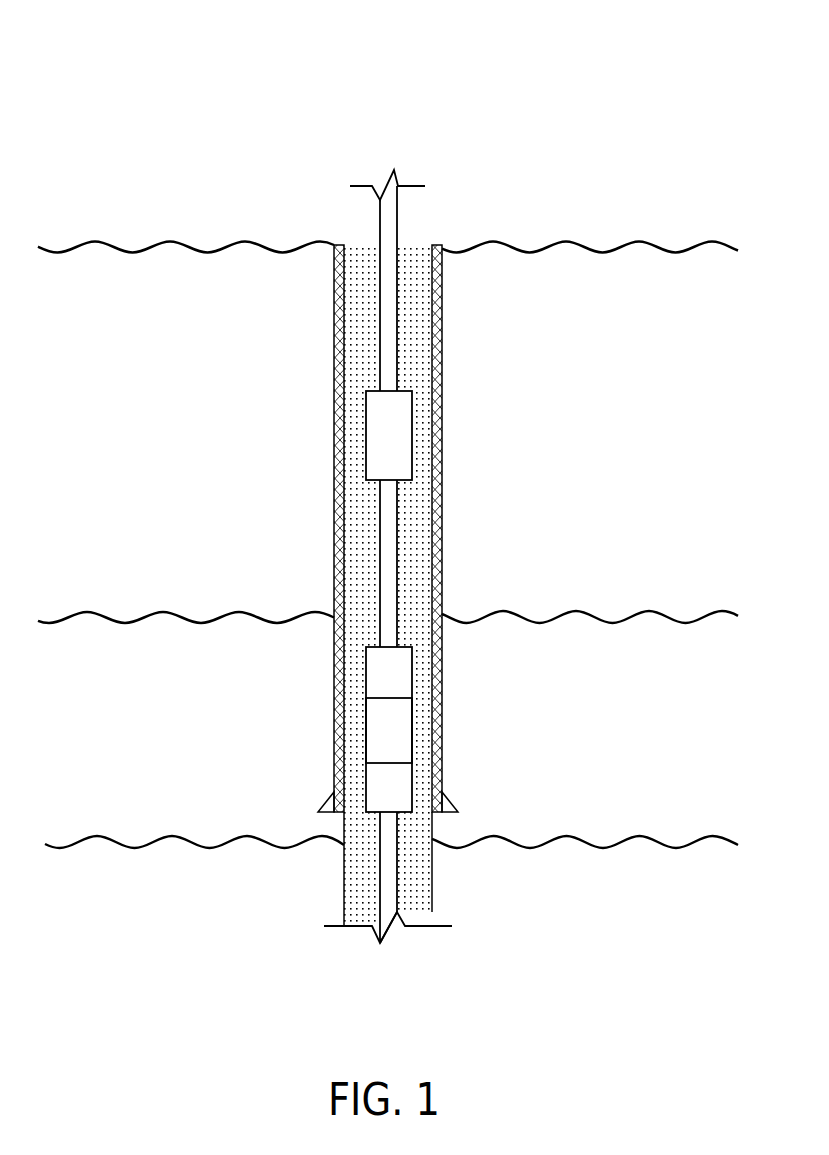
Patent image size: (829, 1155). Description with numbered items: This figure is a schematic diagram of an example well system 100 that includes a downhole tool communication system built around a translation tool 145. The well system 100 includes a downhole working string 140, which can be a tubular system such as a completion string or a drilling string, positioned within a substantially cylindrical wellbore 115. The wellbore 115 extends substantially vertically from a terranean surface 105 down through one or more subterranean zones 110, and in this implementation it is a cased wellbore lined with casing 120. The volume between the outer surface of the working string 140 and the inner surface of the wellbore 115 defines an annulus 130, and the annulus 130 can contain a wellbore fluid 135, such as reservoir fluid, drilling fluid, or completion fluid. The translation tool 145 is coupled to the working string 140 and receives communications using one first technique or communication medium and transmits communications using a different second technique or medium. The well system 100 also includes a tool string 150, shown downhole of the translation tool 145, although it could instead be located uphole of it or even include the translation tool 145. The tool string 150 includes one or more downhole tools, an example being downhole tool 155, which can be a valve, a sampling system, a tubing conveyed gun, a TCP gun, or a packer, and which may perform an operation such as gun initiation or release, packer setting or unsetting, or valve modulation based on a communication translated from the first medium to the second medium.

The well system 100 is at (163, 69).
The terranean surface 105 is at (495, 243).
The subterranean zones 110 is at (630, 672).
The wellbore 115 is at (432, 305).
The casing 120 is at (442, 437).
The annulus 130 is at (421, 560).
The wellbore fluid 135 is at (362, 550).
The working string 140 is at (380, 230).
The translation tool 145 is at (366, 462).
The tool string 150 is at (428, 715).
The downhole tool 155 is at (365, 740).